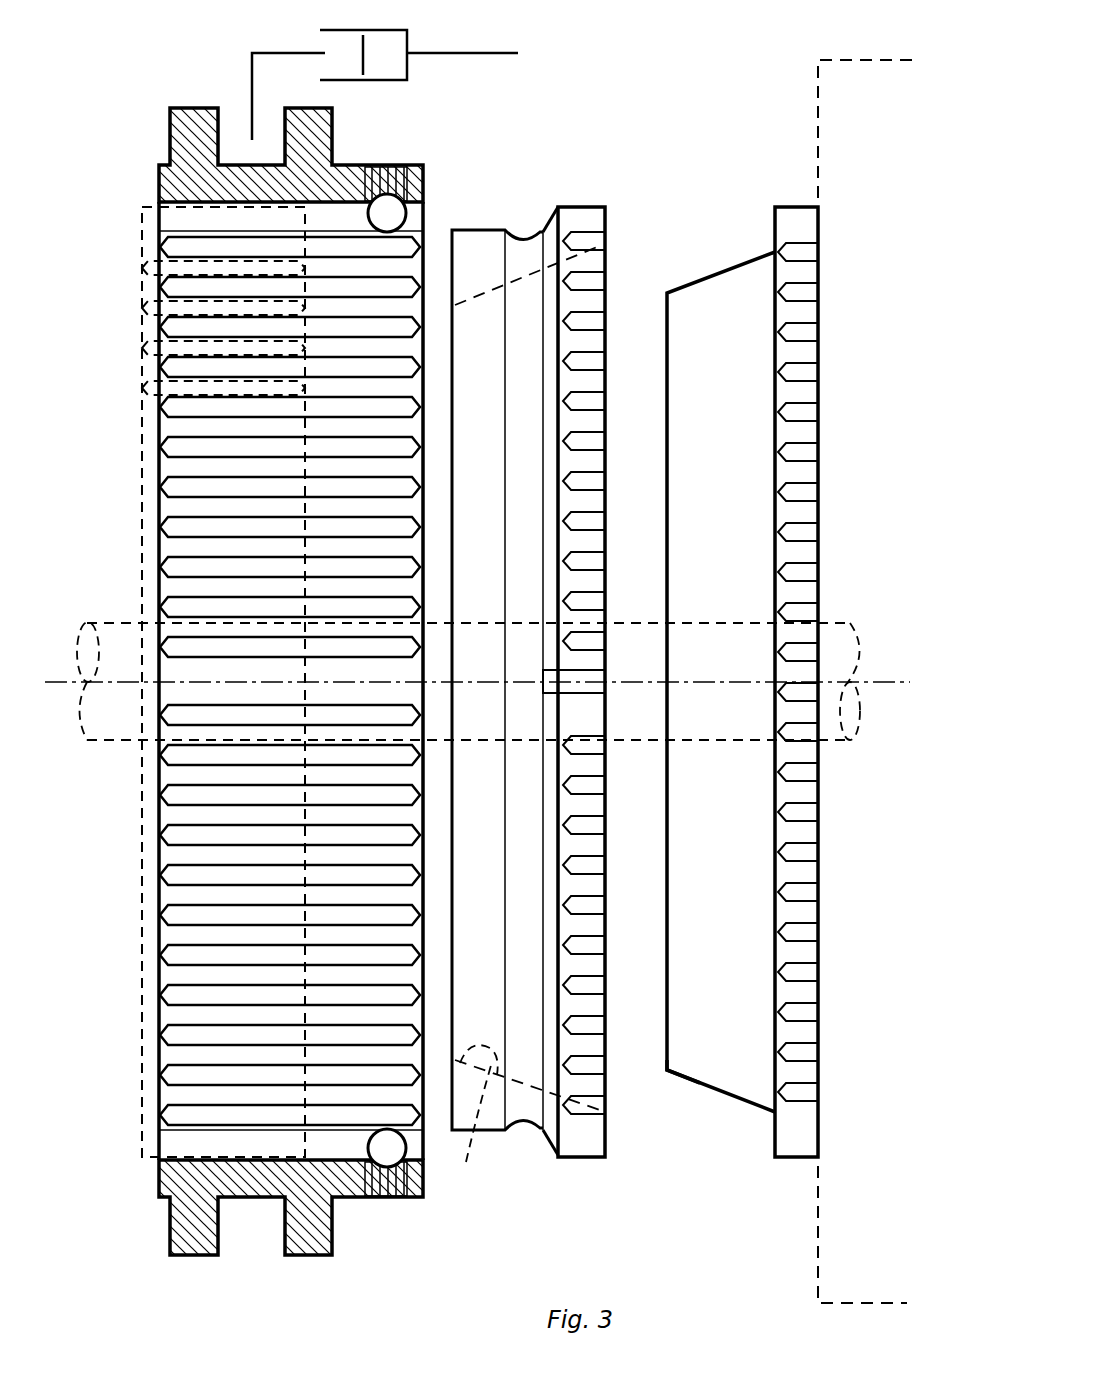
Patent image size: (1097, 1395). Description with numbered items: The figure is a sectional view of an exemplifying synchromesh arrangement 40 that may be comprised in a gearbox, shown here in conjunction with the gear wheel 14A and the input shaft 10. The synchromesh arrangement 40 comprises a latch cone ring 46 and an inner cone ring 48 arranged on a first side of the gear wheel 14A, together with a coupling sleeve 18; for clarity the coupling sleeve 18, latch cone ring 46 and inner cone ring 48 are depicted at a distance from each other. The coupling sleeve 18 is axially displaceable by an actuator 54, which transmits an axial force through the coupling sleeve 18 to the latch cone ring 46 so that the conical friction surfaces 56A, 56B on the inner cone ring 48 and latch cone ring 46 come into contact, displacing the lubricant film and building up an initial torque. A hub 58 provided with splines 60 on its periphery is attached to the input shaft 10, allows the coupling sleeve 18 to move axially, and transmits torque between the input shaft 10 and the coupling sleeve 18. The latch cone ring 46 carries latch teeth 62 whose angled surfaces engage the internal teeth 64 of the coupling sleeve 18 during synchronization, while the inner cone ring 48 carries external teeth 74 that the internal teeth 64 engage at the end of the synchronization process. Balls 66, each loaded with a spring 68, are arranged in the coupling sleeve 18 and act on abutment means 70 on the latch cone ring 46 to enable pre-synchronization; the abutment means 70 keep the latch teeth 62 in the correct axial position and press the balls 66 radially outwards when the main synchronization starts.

The input shaft 10 is at (110, 625).
The gear wheel 14A is at (852, 62).
The coupling sleeve 18 is at (171, 108).
The synchromesh arrangement 40 is at (672, 101).
The latch cone ring 46 is at (498, 228).
The inner cone ring 48 is at (775, 232).
The actuator 54 is at (406, 82).
The friction surface 56A is at (692, 1085).
The friction surface 56B is at (465, 1127).
The hub 58 is at (140, 945).
The splines 60 is at (150, 378).
The latch teeth 62 is at (575, 1125).
The internal teeth 64 is at (243, 1002).
The balls 66 is at (387, 1156).
The spring 68 is at (388, 175).
The abutment means 70 is at (585, 668).
The external teeth 74 is at (800, 1100).